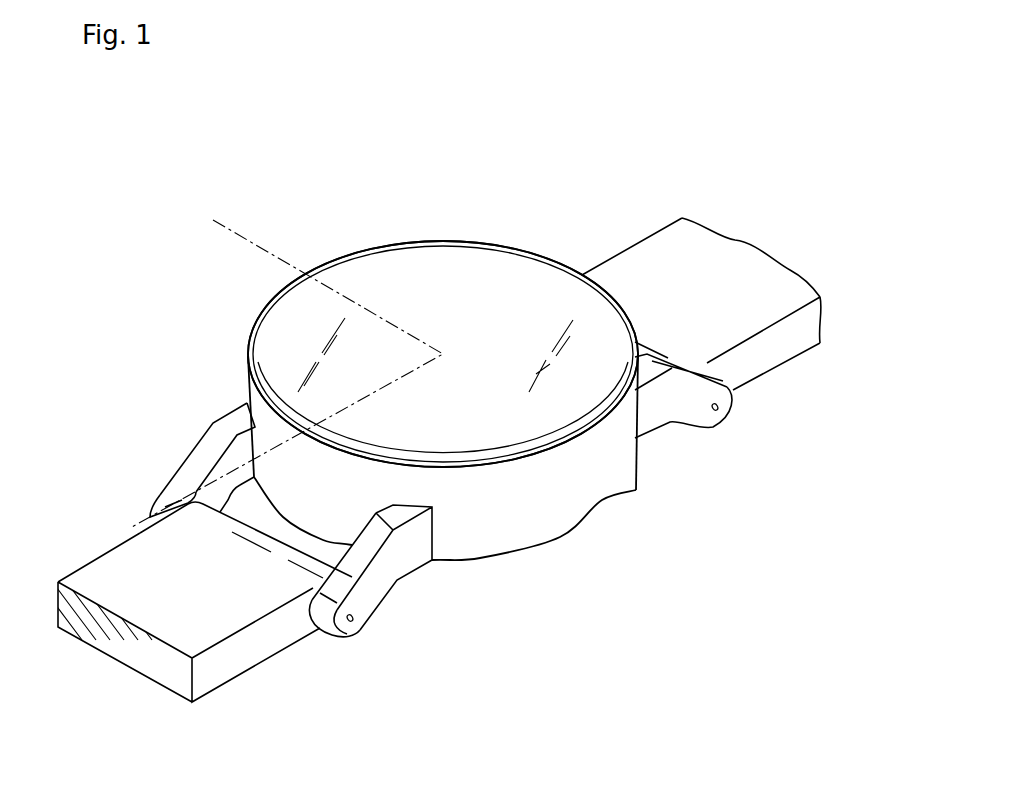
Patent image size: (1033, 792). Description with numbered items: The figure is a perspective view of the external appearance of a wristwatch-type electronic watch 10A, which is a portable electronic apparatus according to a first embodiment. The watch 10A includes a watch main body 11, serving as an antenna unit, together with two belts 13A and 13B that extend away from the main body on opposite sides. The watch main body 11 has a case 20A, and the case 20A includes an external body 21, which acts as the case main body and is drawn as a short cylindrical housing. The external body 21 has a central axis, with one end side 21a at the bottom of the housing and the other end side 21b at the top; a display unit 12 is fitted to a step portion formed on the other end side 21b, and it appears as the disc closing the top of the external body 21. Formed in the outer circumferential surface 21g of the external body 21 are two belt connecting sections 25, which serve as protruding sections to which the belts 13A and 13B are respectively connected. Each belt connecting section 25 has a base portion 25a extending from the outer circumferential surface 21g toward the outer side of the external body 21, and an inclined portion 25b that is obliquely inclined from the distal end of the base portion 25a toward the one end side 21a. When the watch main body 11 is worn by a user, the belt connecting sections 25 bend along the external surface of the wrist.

The wristwatch-type electronic watch 10A is at (526, 188).
The watch main body 11 is at (413, 236).
The display unit 12 is at (360, 273).
The belt 13A is at (96, 582).
The belt 13B is at (668, 250).
The case 20A is at (602, 498).
The external body 21 is at (552, 525).
The one end side 21a is at (300, 527).
The other end side 21b is at (265, 318).
The outer circumferential surface 21g is at (492, 536).
The belt connecting section 25 is at (186, 463).
The base portion 25a is at (231, 419).
The inclined portion 25b is at (166, 492).